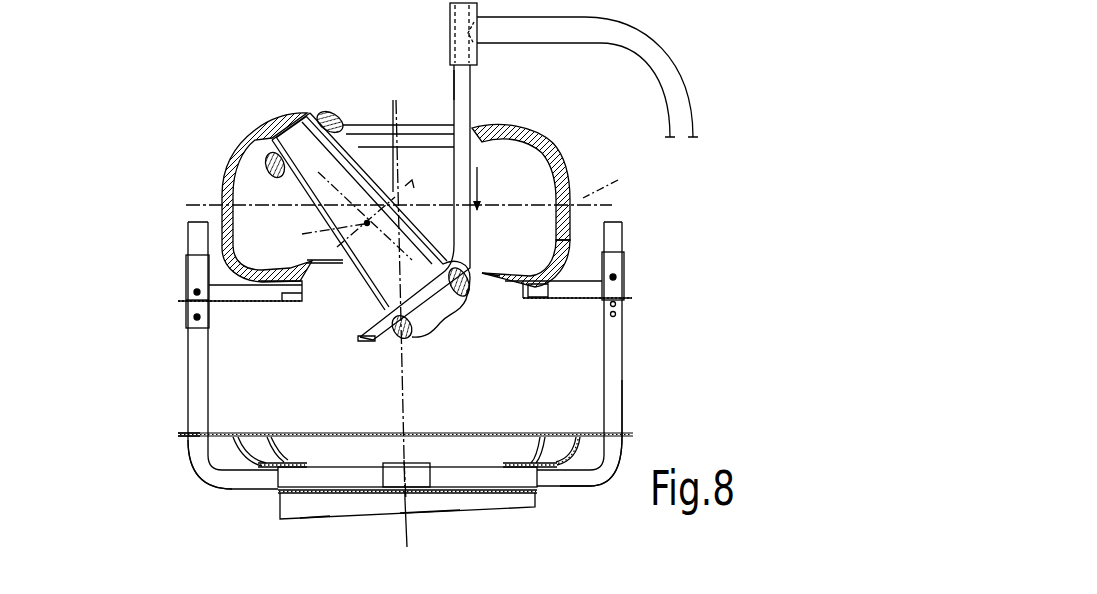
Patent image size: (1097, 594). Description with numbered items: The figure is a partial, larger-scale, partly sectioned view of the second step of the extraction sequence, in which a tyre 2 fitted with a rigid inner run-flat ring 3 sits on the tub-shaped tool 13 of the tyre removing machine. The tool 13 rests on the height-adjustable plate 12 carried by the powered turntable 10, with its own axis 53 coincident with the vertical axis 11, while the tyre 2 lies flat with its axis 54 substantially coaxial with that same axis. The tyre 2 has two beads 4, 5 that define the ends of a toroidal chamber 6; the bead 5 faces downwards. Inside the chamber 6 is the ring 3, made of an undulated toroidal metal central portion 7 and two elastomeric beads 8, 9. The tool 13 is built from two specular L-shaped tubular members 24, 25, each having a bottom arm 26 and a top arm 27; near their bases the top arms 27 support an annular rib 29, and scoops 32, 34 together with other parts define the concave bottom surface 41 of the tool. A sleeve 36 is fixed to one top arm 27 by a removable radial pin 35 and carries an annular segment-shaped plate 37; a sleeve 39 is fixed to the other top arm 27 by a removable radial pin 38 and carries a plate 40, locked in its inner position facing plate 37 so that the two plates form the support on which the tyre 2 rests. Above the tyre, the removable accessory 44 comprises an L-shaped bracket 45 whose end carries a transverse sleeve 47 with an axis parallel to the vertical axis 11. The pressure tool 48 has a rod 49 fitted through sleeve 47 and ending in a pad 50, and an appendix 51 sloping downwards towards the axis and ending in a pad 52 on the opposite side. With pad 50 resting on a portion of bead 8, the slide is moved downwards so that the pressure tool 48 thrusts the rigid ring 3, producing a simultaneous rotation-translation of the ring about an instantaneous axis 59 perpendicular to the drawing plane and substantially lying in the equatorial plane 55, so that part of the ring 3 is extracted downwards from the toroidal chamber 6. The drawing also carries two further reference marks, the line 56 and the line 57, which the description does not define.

The tyre 2 is at (580, 185).
The rigid inner run-flat ring 3 is at (356, 296).
The bead 4 is at (485, 150).
The bead 5 is at (481, 272).
The toroidal chamber 6 is at (550, 172).
The undulated toroidal metal central portion 7 is at (432, 338).
The bead 8 is at (338, 112).
The bead 9 is at (264, 167).
The powered turntable 10 is at (274, 531).
The vertical axis 11 is at (401, 501).
The height-adjustable plate 12 is at (333, 507).
The tub-shaped tool 13 is at (163, 453).
The tubular member 24 is at (628, 383).
The tubular member 25 is at (190, 466).
The bottom arm 26 is at (254, 478).
The top arm 27 is at (193, 349).
The annular rib 29 is at (594, 429).
The scoop 32 is at (573, 455).
The scoop 34 is at (235, 452).
The removable radial pin 35 is at (617, 278).
The sleeve 36 is at (624, 262).
The annular segment-shaped plate 37 is at (548, 285).
The removable radial pin 38 is at (196, 291).
The sleeve 39 is at (200, 270).
The annular segment-shaped plate 40 is at (281, 300).
The concave bottom surface 41 is at (441, 456).
The removable accessory 44 is at (680, 64).
The L-shaped bracket 45 is at (673, 101).
The transverse sleeve 47 is at (452, 38).
The pressure tool 48 is at (478, 109).
The rod 49 is at (463, 85).
The pad 50 is at (470, 298).
The appendix 51 is at (385, 348).
The pad 52 is at (364, 343).
The axis 53 is at (403, 498).
The axis 54 is at (393, 113).
The equatorial plane 55 is at (278, 115).
The section line 56 is at (411, 180).
The section line 57 is at (614, 179).
The instantaneous axis 59 is at (299, 236).